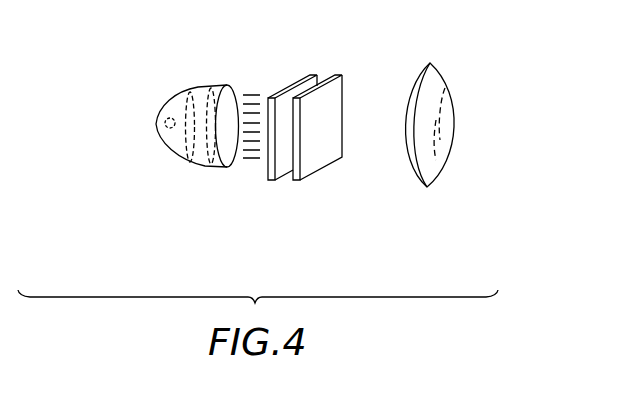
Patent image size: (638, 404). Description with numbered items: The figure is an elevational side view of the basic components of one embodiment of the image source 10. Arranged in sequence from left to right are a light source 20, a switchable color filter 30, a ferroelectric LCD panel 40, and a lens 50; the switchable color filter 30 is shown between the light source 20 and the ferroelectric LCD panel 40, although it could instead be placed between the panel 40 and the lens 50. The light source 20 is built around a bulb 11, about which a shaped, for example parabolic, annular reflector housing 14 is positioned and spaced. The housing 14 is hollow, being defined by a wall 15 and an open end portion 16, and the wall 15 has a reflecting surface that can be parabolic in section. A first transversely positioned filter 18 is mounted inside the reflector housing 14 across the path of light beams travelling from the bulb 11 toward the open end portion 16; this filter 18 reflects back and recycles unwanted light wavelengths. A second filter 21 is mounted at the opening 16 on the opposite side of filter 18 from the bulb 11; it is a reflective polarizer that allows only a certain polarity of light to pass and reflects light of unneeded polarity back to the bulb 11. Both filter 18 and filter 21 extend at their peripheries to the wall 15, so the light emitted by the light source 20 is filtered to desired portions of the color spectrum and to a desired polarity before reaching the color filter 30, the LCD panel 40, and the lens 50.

The image source 10 is at (164, 127).
The bulb 11 is at (167, 130).
The annular reflector housing 14 is at (158, 114).
The wall 15 is at (178, 96).
The open end portion 16 is at (226, 170).
The first filter 18 is at (188, 163).
The light source 20 is at (209, 66).
The second filter 21 is at (221, 86).
The switchable color filter 30 is at (307, 80).
The ferroelectric LCD panel 40 is at (342, 74).
The lens 50 is at (442, 72).